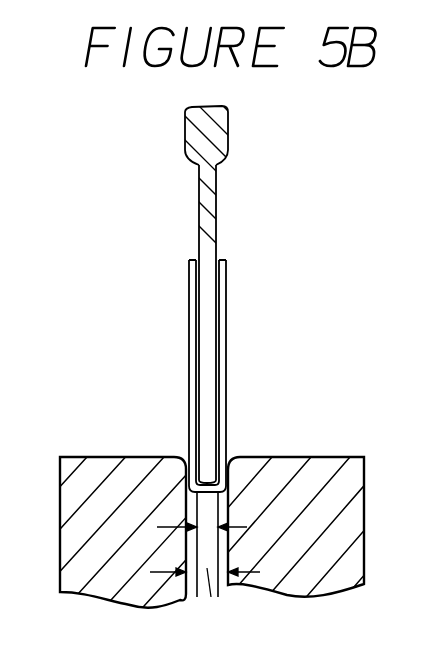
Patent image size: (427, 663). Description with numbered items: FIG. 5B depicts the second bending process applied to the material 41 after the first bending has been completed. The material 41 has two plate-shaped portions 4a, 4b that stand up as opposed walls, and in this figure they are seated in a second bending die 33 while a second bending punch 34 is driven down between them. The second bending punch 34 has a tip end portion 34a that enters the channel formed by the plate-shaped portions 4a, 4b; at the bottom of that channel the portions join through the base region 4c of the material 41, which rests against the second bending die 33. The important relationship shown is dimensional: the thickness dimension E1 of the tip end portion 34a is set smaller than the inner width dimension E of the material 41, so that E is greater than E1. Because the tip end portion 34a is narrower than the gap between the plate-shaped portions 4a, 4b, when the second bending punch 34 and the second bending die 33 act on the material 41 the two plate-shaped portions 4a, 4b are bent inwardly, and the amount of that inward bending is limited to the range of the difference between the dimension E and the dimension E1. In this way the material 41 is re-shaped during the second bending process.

The second bending die 33 is at (98, 475).
The second bending punch 34 is at (217, 138).
The tip end portion 34a is at (206, 388).
The material 41 is at (205, 376).
The plate-shaped portion 4a is at (226, 336).
The plate-shaped portion 4b is at (189, 288).
The sleeve bottom 4c is at (189, 468).
The inner width dimension E is at (205, 602).
The thickness dimension E1 is at (222, 525).